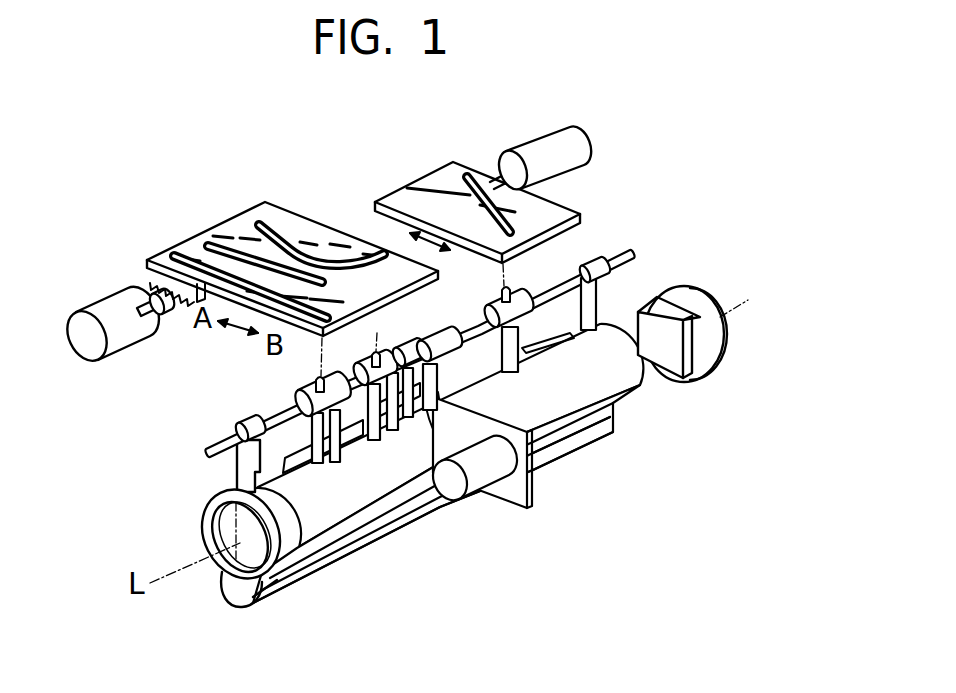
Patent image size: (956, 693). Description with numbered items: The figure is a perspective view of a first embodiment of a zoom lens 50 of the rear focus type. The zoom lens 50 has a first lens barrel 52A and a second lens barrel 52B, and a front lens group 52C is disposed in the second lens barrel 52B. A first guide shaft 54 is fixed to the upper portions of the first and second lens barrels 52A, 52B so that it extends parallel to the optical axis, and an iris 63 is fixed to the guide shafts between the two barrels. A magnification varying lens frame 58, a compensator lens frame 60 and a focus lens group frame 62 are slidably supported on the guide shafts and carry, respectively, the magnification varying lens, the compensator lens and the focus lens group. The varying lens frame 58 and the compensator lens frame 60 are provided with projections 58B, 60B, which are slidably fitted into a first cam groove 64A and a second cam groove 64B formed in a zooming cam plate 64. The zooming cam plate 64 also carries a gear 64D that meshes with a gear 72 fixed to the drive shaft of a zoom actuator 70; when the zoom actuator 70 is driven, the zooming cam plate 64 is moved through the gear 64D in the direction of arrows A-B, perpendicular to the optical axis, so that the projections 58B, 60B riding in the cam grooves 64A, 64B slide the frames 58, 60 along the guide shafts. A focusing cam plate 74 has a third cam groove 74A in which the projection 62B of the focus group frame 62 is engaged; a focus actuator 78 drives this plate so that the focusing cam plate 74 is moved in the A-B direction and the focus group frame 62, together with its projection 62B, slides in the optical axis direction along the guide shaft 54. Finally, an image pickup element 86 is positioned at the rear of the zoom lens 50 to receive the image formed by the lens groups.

The zoom lens 50 is at (655, 215).
The first lens barrel 52A is at (573, 452).
The second lens barrel 52B is at (353, 550).
The front lens group 52C is at (223, 572).
The first guide shaft 54 is at (207, 452).
The magnification varying lens frame 58 is at (300, 405).
The projection 58B is at (314, 383).
The compensator lens frame 60 is at (383, 440).
The projection 60B is at (378, 354).
The focus lens group frame 62 is at (518, 333).
The projection 62B is at (508, 289).
The iris 63 is at (533, 502).
The zooming cam plate 64 is at (167, 267).
The first cam groove 64A is at (228, 245).
The second cam groove 64B is at (266, 222).
The gear 64D is at (148, 284).
The zoom actuator 70 is at (118, 338).
The gear 72 is at (186, 308).
The focusing cam plate 74 is at (422, 187).
The third cam groove 74A is at (476, 175).
The focus actuator 78 is at (572, 148).
The image pickup element 86 is at (712, 353).